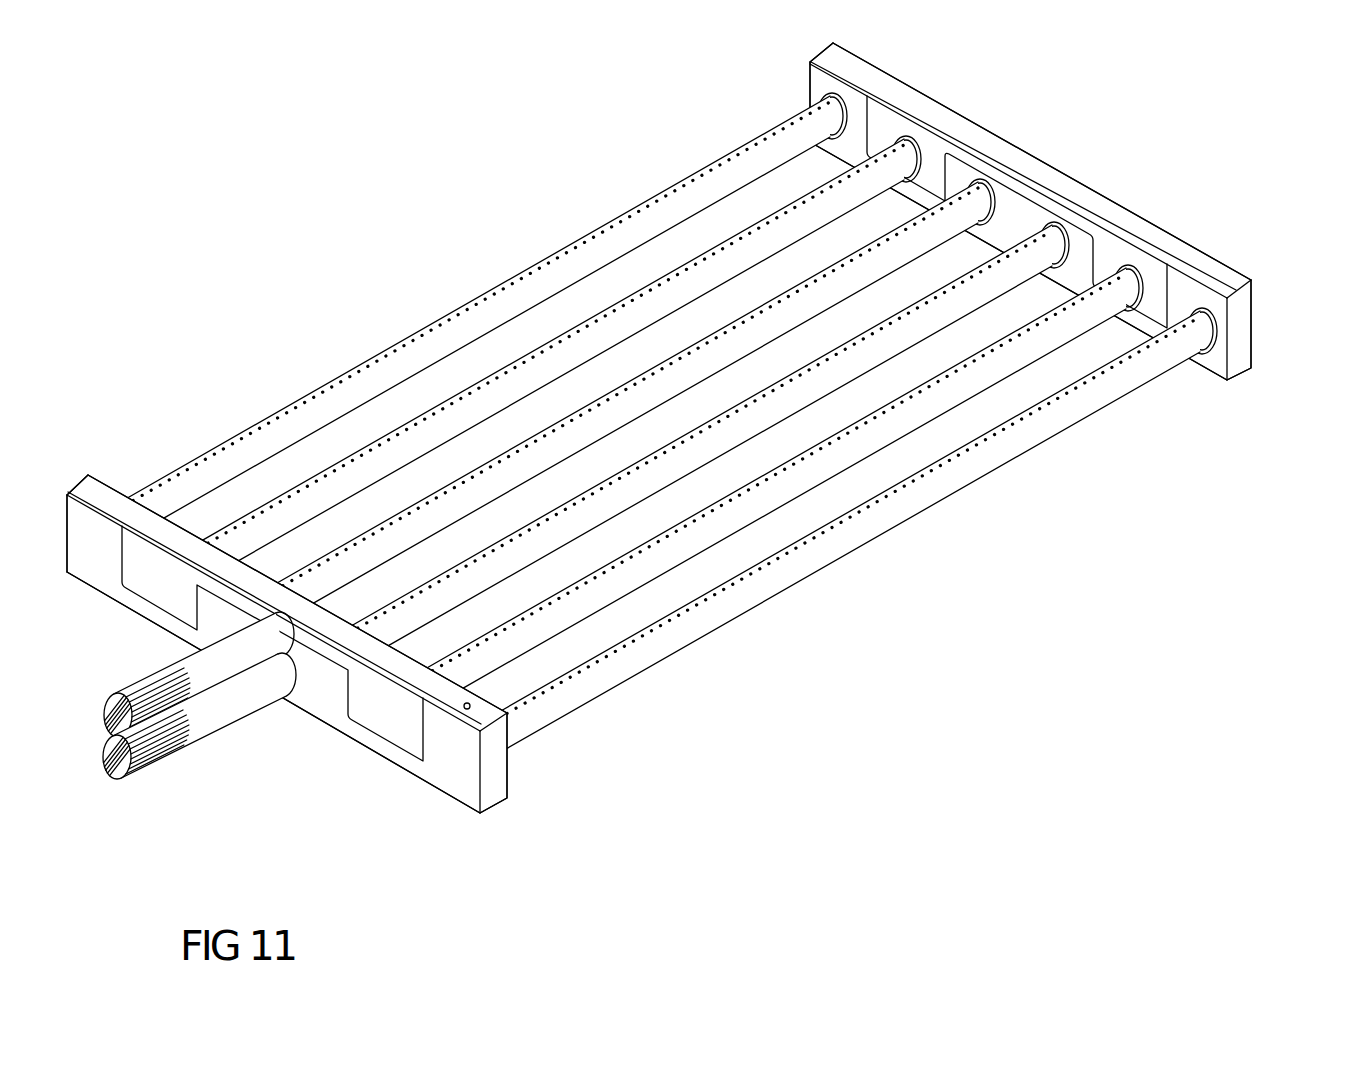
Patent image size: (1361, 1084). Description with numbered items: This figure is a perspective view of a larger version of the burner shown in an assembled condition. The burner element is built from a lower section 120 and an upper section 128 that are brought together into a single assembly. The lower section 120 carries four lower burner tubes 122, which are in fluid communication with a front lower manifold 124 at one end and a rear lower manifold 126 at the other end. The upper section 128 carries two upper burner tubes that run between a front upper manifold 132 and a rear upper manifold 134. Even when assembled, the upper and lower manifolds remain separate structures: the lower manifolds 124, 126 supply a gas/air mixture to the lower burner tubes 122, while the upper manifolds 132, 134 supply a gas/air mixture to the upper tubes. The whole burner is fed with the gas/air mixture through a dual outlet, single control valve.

The lower section 120 is at (672, 420).
The lower burner tubes 122 is at (760, 592).
The front lower manifold 124 is at (490, 782).
The rear lower manifold 126 is at (1238, 343).
The upper section 128 is at (1075, 211).
The front upper manifold 132 is at (373, 713).
The rear upper manifold 134 is at (1143, 233).